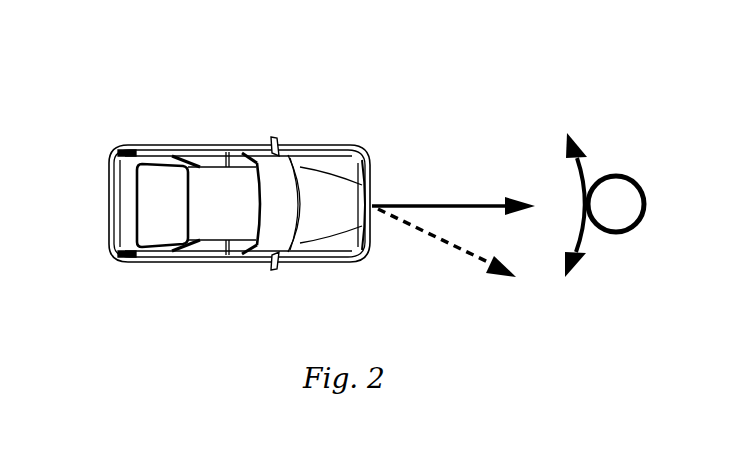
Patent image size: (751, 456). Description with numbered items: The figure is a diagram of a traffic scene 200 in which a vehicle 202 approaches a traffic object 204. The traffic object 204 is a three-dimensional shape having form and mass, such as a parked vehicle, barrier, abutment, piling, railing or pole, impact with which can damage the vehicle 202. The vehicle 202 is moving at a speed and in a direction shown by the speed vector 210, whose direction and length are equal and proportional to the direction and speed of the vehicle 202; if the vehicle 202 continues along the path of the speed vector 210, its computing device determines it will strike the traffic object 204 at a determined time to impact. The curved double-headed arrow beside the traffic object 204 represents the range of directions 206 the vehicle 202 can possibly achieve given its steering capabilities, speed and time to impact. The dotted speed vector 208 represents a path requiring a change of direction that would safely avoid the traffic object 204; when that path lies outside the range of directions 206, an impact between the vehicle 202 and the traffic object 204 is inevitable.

The traffic scene 200 is at (360, 35).
The vehicle 202 is at (207, 147).
The traffic object 204 is at (645, 198).
The range of directions 206 is at (577, 177).
The dotted speed vector 208 is at (438, 238).
The speed vector 210 is at (471, 200).